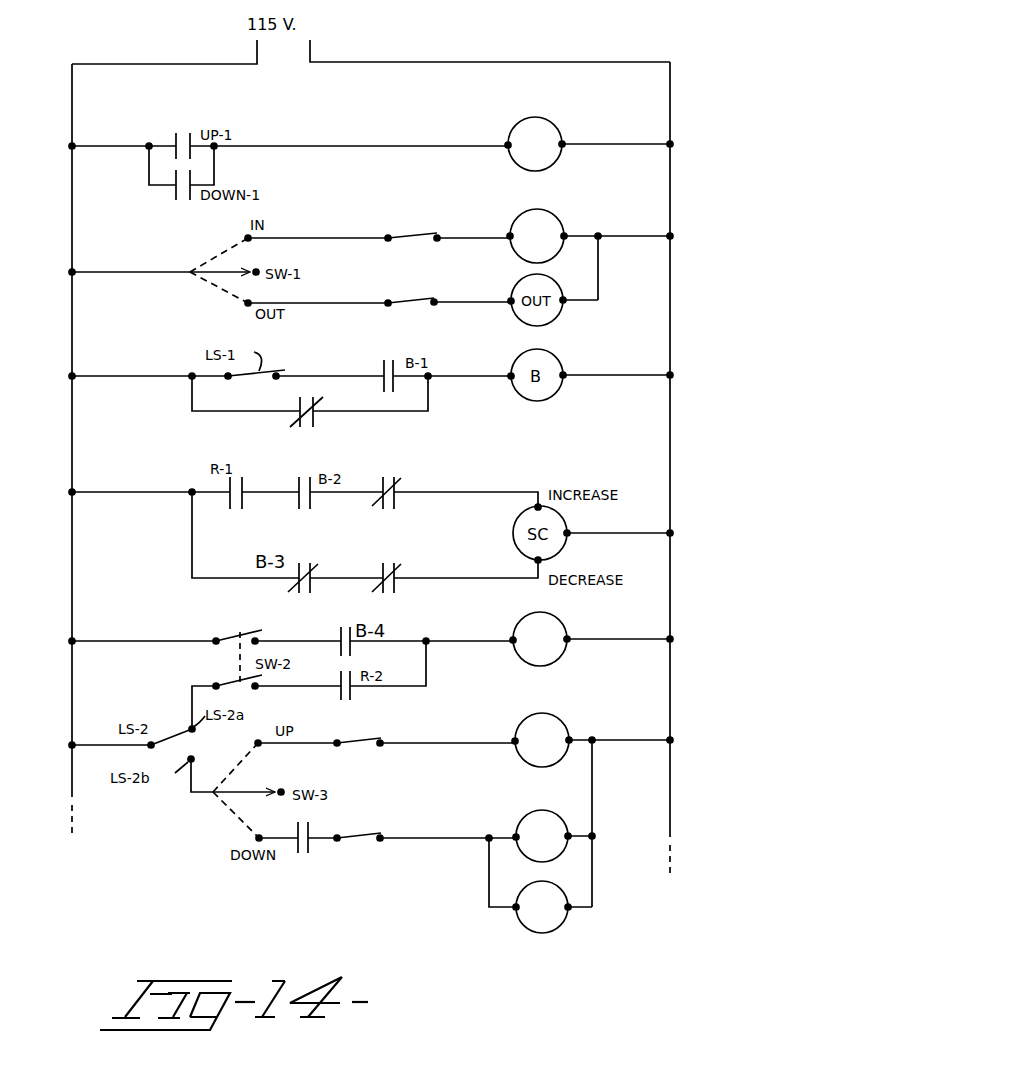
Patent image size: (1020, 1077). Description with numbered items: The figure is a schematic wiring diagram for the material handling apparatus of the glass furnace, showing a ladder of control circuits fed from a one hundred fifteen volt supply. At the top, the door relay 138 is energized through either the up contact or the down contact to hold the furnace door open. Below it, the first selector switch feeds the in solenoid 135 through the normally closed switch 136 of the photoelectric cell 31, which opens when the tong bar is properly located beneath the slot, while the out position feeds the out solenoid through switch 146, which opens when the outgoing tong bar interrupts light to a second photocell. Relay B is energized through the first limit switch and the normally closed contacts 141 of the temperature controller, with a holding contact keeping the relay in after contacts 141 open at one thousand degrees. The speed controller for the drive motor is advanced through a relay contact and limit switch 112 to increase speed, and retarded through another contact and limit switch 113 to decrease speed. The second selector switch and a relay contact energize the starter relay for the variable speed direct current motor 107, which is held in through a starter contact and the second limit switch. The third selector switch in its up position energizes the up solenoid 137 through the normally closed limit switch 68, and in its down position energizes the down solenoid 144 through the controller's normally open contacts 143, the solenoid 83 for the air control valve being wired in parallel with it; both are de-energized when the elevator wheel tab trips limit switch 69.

The door relay 138 is at (558, 118).
The in solenoid 135 is at (558, 210).
The photoelectric cell 31 is at (393, 211).
The normally closed switch 136 is at (410, 213).
The switch 146 is at (428, 288).
The normally closed contacts 141 is at (312, 431).
The limit switch 112 is at (395, 475).
The limit switch 113 is at (395, 565).
The variable speed direct current motor 107 is at (563, 622).
The normally closed limit switch 68 is at (356, 738).
The up solenoid 137 is at (563, 712).
The down solenoid 144 is at (546, 809).
The limit switch 69 is at (352, 835).
The normally open contacts 143 is at (305, 855).
The solenoid 83 is at (562, 928).